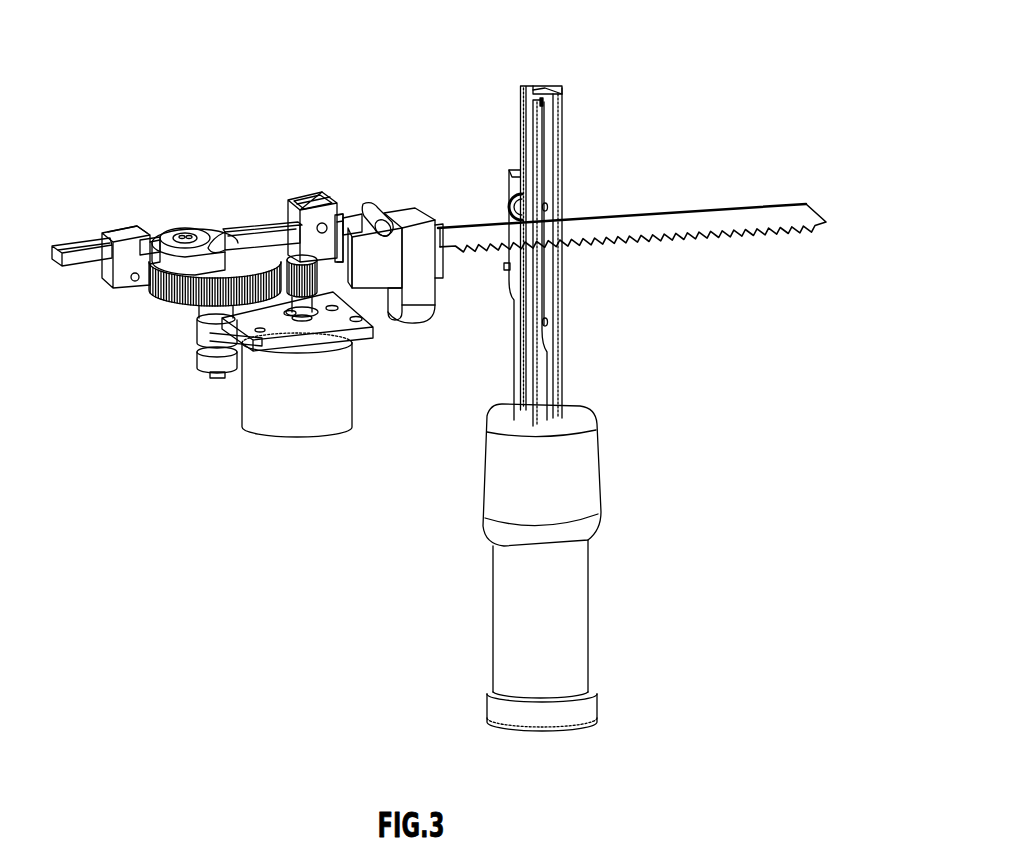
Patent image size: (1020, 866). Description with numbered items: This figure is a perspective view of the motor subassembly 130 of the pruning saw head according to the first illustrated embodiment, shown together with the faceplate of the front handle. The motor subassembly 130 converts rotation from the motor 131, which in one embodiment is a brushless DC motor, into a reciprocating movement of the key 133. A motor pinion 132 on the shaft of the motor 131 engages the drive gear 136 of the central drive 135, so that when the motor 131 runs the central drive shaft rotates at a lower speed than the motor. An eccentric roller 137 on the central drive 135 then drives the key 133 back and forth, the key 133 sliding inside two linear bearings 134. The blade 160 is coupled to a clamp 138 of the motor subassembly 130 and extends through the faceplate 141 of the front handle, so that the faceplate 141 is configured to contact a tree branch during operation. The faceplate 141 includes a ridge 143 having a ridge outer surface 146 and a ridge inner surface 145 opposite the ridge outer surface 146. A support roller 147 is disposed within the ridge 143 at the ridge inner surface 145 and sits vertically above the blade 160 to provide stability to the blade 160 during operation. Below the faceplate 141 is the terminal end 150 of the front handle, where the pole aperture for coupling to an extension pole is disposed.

The motor subassembly 130 is at (160, 100).
The motor 131 is at (275, 422).
The motor pinion 132 is at (368, 330).
The key 133 is at (85, 266).
The linear bearings 134 is at (125, 285).
The central drive 135 is at (210, 276).
The drive gear 136 is at (165, 302).
The eccentric roller 137 is at (185, 235).
The clamp 138 is at (415, 240).
The faceplate 141 is at (557, 357).
The ridge 143 is at (555, 92).
The ridge inner surface 145 is at (525, 90).
The ridge outer surface 146 is at (565, 145).
The support roller 147 is at (516, 188).
The terminal end 150 is at (578, 606).
The blade 160 is at (688, 216).